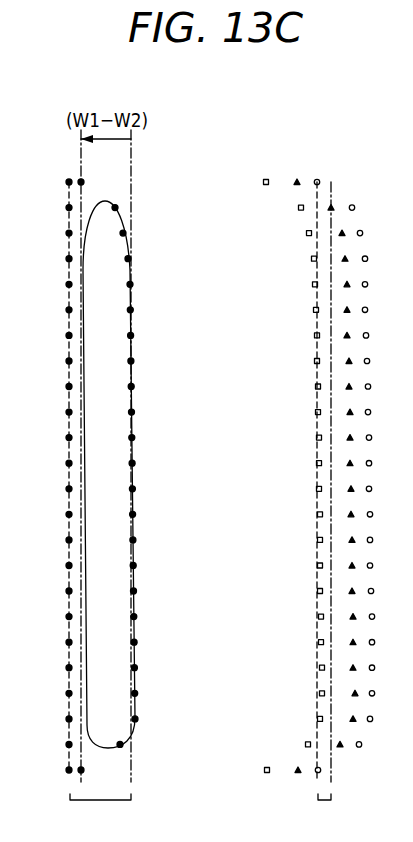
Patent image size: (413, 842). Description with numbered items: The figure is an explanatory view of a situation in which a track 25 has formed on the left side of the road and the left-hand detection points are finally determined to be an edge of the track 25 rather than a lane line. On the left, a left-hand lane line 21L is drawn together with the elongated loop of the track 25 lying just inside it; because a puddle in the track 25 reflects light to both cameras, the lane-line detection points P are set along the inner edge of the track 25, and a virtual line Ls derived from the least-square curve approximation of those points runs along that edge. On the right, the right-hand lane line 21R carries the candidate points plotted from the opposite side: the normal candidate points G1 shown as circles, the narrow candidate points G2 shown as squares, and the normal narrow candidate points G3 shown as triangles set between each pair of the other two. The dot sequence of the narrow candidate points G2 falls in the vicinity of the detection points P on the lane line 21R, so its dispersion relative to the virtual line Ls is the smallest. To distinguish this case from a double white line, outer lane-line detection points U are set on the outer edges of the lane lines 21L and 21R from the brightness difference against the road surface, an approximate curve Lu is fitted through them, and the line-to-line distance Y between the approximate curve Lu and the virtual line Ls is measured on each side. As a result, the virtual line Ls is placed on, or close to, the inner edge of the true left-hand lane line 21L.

The virtual line Ls is at (134, 190).
The approximate curve Lu is at (66, 243).
The lane-line detection point P is at (133, 412).
The track 25 is at (120, 479).
The left-hand lane line 21L is at (74, 601).
The right-hand lane line 21R is at (318, 270).
The outer lane-line detection point U is at (67, 772).
The line-to-line distance Y is at (201, 811).
The normal candidate point G1 is at (366, 337).
The narrow candidate point G2 is at (314, 310).
The normal narrow candidate point G3 is at (330, 208).